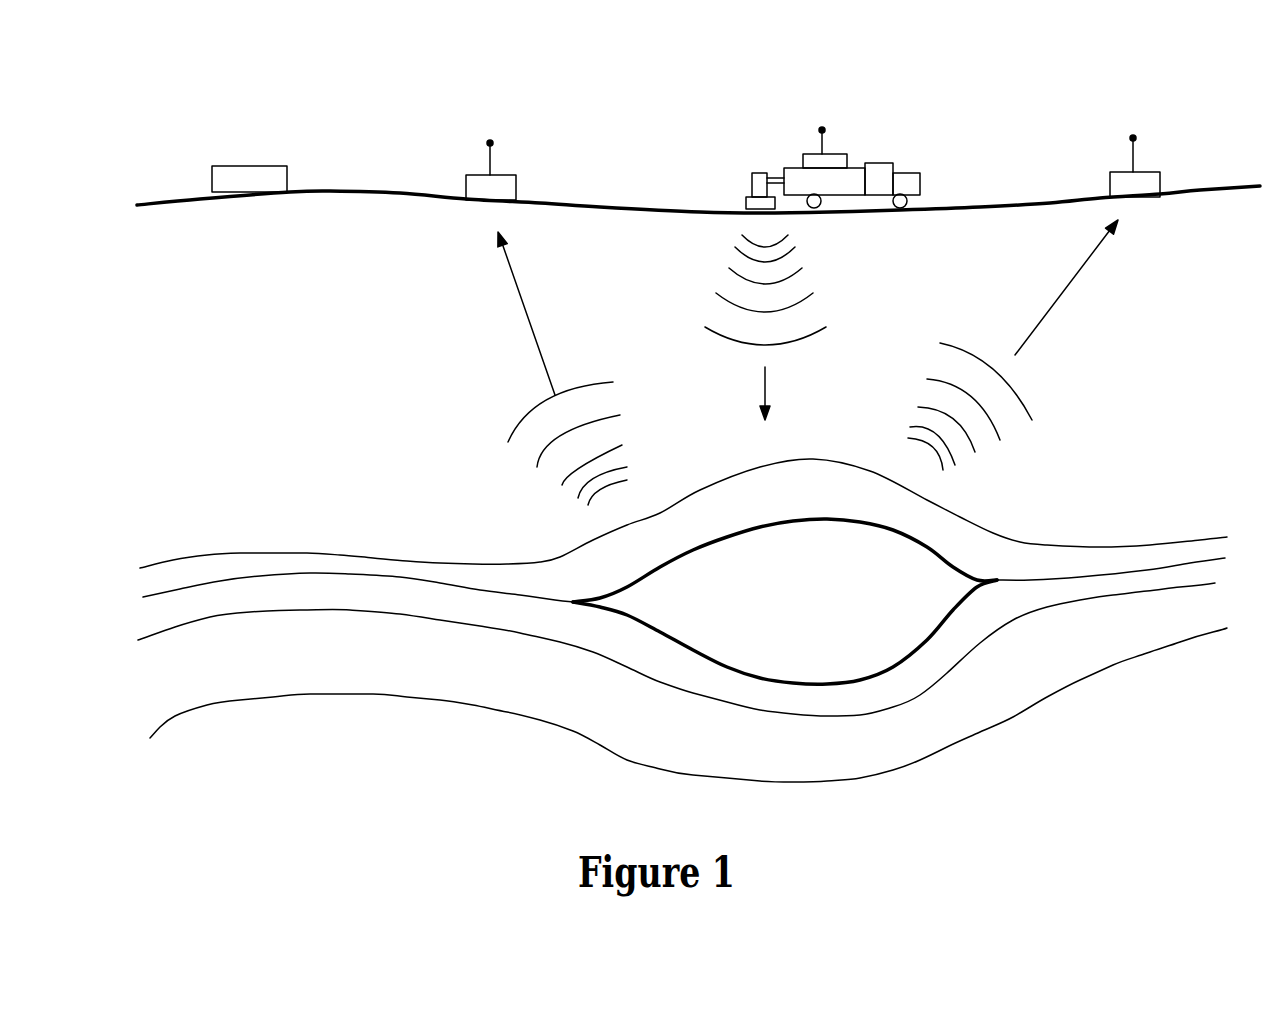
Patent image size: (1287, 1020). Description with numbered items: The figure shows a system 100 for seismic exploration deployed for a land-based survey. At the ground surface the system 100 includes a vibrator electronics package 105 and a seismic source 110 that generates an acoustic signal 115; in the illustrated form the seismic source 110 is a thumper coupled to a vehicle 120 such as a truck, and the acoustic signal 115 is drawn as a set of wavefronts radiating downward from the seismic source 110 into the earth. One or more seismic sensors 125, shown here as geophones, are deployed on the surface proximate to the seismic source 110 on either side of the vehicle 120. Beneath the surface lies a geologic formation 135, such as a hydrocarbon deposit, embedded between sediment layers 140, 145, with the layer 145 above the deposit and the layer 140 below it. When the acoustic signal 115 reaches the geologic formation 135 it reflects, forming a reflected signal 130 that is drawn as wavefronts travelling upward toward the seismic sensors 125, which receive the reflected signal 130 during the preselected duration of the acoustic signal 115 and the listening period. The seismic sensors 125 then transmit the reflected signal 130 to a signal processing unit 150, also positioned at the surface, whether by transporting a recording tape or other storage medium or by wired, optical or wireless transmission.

The system for seismic exploration 100 is at (1140, 68).
The vibrator electronics package 105 is at (835, 154).
The seismic source 110 is at (760, 172).
The acoustic signal 115 is at (838, 311).
The vehicle 120 is at (957, 168).
The seismic sensors 125 is at (465, 187).
The reflected signal 130 is at (506, 493).
The geologic formation 135 is at (817, 605).
The sediment layer 140 is at (825, 702).
The sediment layer 145 is at (836, 503).
The signal processing unit 150 is at (270, 165).